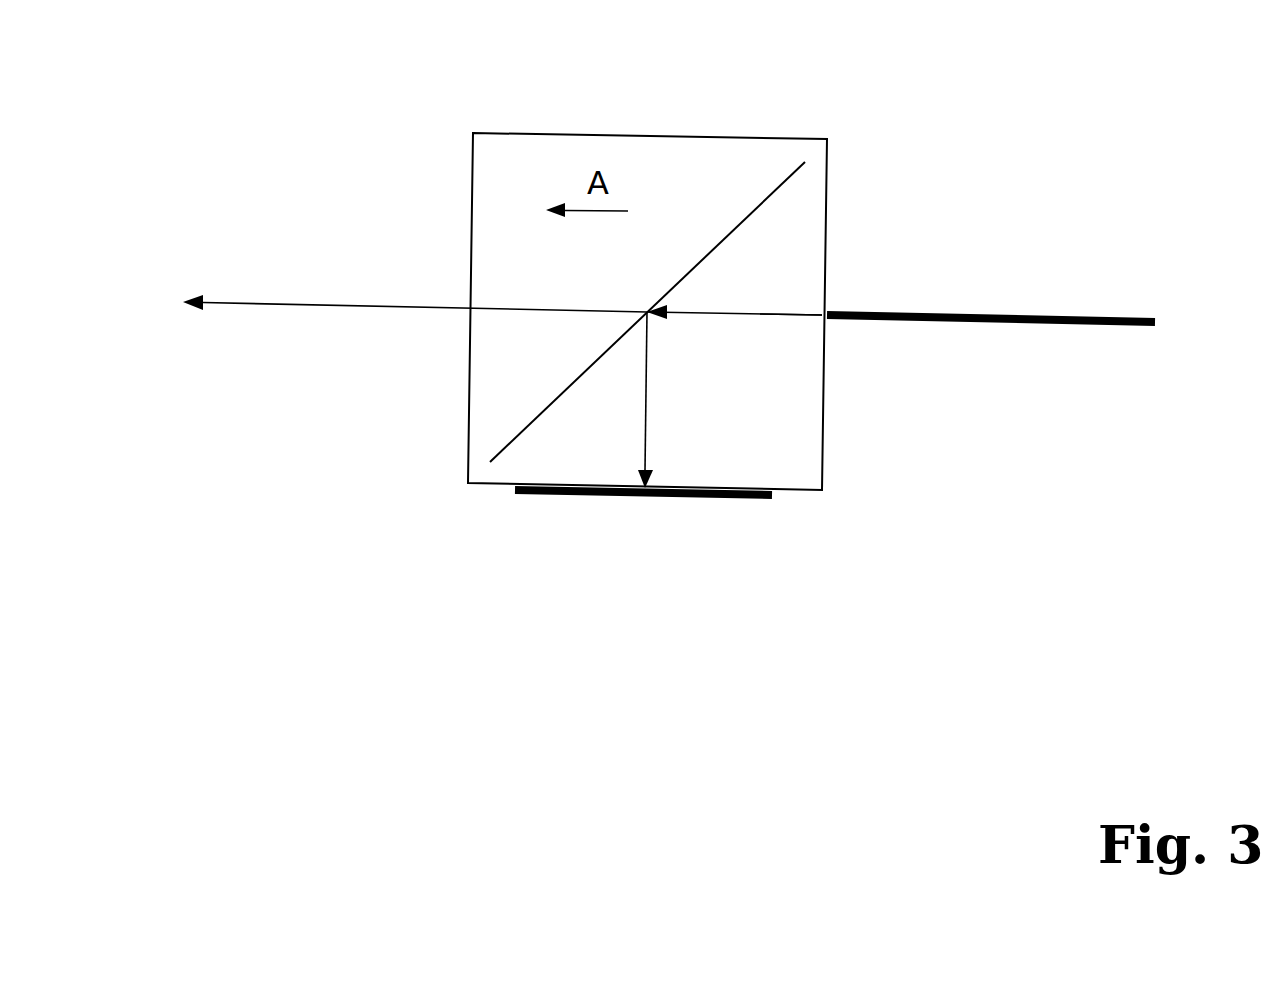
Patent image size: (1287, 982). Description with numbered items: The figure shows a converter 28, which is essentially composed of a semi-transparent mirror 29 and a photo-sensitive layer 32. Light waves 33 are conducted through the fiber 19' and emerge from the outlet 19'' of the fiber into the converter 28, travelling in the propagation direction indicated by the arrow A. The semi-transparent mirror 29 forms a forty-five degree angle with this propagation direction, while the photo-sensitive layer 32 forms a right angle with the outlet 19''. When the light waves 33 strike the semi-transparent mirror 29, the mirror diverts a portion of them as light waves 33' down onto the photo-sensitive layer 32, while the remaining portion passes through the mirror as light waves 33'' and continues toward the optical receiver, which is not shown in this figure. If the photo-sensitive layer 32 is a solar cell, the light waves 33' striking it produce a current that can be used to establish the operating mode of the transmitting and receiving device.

The converter 28 is at (757, 137).
The semi-transparent mirror 29 is at (750, 213).
The fiber 19' is at (1032, 384).
The outlet of the fiber 19'' is at (869, 375).
The light waves 33 is at (813, 425).
The light waves striking the photo-sensitive layer 33' is at (539, 457).
The light waves passing through the mirror 33'' is at (415, 358).
The photo-sensitive layer 32 is at (708, 498).